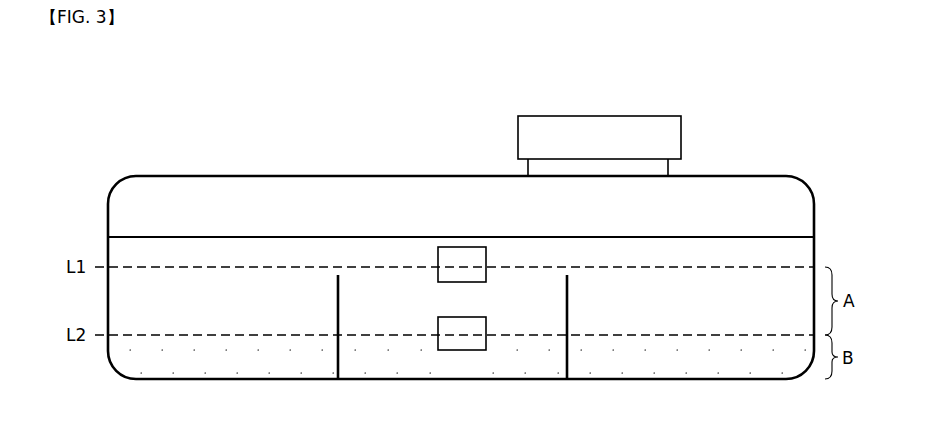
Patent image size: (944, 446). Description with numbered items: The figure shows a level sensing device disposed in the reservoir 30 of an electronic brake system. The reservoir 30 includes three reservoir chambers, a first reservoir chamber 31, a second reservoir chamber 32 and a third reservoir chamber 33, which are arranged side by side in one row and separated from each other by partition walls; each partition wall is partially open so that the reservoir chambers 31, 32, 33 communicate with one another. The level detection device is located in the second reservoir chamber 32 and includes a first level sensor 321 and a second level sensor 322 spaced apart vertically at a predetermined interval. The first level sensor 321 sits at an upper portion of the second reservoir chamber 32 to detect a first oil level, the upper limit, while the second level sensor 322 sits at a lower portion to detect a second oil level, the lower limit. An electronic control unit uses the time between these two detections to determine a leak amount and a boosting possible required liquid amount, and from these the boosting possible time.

The reservoir 30 is at (108, 241).
The first reservoir chamber 31 is at (747, 299).
The second reservoir chamber 32 is at (400, 297).
The third reservoir chamber 33 is at (200, 297).
The first level sensor 321 is at (460, 247).
The second level sensor 322 is at (460, 350).